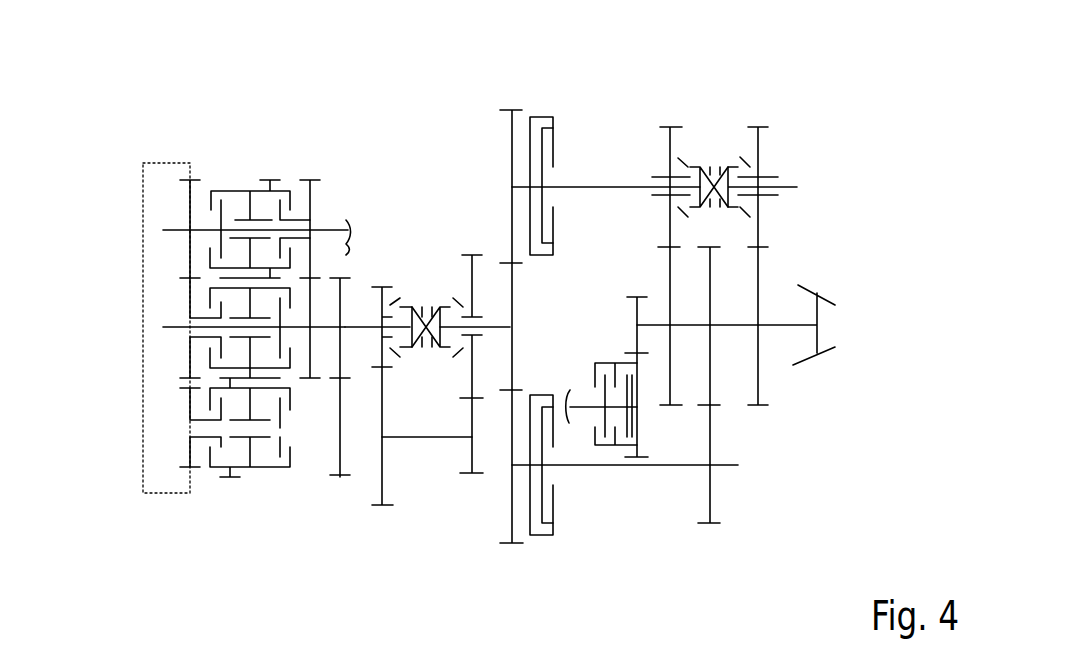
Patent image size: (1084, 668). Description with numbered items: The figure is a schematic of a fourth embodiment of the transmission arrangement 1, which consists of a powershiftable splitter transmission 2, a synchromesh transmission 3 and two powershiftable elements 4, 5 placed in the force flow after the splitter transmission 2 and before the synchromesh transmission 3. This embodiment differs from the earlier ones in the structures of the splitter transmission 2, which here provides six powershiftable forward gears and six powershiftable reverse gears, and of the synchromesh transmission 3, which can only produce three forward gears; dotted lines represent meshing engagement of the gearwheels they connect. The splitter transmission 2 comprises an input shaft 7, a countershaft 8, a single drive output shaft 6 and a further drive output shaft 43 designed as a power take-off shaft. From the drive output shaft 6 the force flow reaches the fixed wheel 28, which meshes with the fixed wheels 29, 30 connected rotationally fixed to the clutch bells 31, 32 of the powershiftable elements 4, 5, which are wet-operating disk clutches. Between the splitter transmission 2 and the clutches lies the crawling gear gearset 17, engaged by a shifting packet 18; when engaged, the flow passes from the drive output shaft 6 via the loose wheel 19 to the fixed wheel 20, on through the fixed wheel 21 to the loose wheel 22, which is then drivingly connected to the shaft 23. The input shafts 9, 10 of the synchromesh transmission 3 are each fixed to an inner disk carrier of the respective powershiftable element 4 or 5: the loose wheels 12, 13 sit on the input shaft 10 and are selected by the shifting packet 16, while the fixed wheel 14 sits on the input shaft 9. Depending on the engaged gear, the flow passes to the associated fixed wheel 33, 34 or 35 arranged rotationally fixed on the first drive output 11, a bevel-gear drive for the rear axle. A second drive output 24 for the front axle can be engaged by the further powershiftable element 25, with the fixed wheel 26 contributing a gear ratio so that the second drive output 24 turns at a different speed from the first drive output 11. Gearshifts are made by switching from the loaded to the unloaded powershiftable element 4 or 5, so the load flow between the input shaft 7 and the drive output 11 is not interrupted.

The transmission arrangement 1 is at (201, 108).
The splitter transmission 2 is at (220, 502).
The synchromesh transmission 3 is at (786, 516).
The powershiftable element 4 is at (546, 546).
The powershiftable element 5 is at (543, 104).
The drive output shaft 6 is at (359, 322).
The input shaft 7 is at (163, 327).
The countershaft 8 is at (163, 230).
The input shaft 9 is at (670, 467).
The input shaft 10 is at (673, 152).
The first drive output 11 is at (773, 328).
The loose wheel 12 is at (720, 157).
The loose wheel 13 is at (761, 148).
The fixed wheel 14 is at (717, 503).
The shifting packet 16 is at (762, 125).
The crawling gear gearset 17 is at (417, 262).
The shifting packet 18 is at (429, 300).
The loose wheel 19 is at (401, 285).
The fixed wheel 20 is at (380, 476).
The fixed wheel 21 is at (473, 457).
The loose wheel 22 is at (427, 440).
The shaft 23 is at (497, 330).
The second drive output 24 is at (575, 410).
The further powershiftable element 25 is at (617, 455).
The fixed wheel 26 is at (640, 312).
The fixed wheel 28 is at (514, 290).
The fixed wheel 29 is at (513, 505).
The fixed wheel 30 is at (505, 148).
The clutch bell 31 is at (558, 513).
The clutch bell 32 is at (556, 140).
The fixed wheel 33 is at (672, 360).
The fixed wheel 34 is at (722, 362).
The fixed wheel 35 is at (761, 257).
The further drive output shaft 43 is at (345, 222).